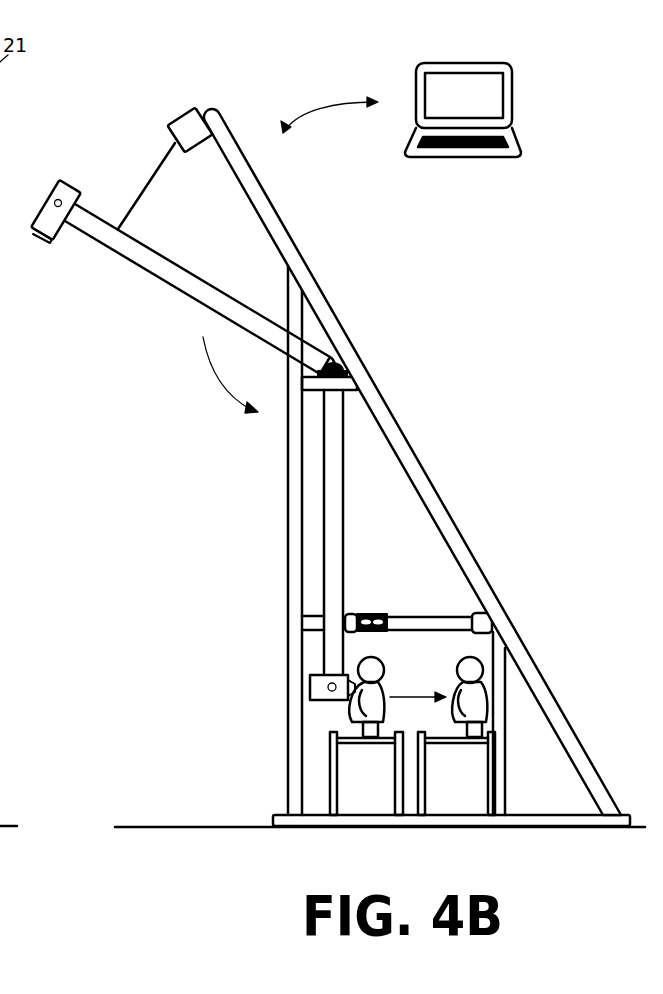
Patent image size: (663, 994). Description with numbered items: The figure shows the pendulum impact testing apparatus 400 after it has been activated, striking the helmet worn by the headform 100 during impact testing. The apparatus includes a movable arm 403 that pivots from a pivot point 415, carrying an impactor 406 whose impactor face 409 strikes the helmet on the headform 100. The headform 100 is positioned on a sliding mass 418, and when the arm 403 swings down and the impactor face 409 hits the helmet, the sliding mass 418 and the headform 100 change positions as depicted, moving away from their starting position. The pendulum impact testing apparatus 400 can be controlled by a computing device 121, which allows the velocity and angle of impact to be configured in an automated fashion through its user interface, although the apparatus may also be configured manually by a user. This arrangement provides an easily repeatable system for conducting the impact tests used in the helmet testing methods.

The pendulum impact testing apparatus 400 is at (228, 50).
The movable arm 403 is at (187, 293).
The impactor 406 is at (70, 178).
The impactor face 409 is at (53, 243).
The pivot point 415 is at (343, 363).
The headform 100 is at (387, 613).
The sliding mass 418 is at (332, 745).
The computing device 121 is at (512, 68).